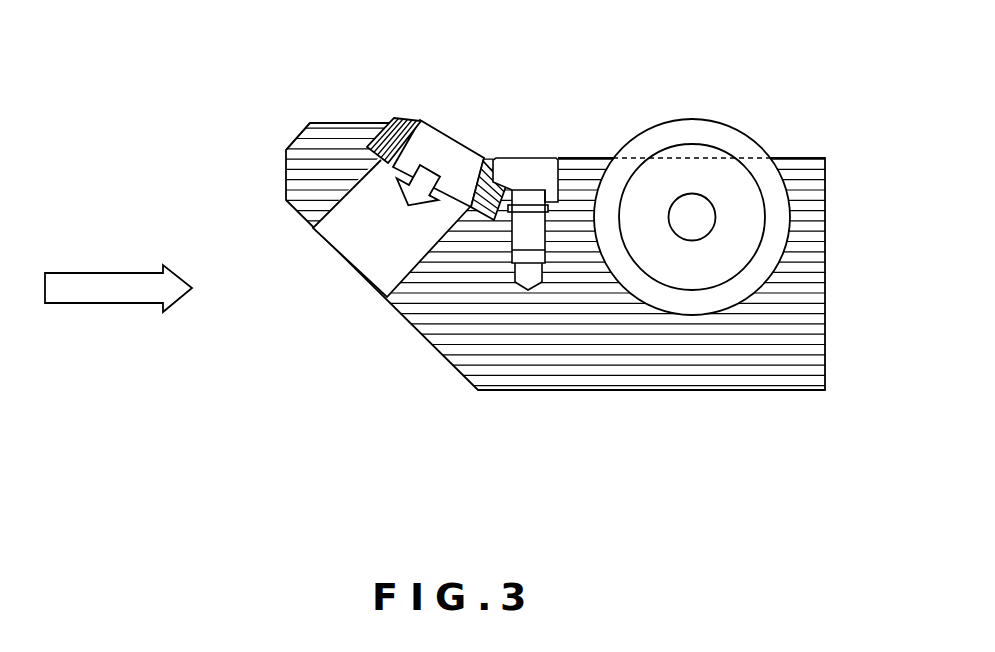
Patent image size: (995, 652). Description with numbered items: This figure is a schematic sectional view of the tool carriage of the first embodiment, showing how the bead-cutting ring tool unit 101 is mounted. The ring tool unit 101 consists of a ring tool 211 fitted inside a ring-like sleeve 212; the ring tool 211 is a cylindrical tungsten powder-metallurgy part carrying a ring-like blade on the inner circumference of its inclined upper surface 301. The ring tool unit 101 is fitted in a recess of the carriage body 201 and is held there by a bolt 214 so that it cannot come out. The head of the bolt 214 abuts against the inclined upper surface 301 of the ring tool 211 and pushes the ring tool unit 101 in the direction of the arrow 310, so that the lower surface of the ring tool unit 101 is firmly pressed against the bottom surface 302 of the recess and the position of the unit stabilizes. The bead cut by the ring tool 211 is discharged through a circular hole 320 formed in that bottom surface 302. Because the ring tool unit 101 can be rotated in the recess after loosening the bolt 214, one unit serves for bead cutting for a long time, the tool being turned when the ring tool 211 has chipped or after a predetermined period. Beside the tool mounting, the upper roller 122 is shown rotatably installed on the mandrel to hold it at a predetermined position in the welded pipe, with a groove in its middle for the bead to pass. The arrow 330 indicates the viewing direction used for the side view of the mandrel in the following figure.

The ring tool unit 101 is at (414, 105).
The ring tool 211 is at (407, 118).
The ring-like sleeve 212 is at (437, 63).
The inclined upper surface 301 is at (487, 160).
The bolt 214 is at (543, 165).
The roller 122 is at (680, 130).
The holder body 201 is at (567, 347).
The bottom surface 302 is at (385, 160).
The arrow 310 is at (410, 193).
The circular hole 320 is at (336, 212).
The arrow 330 is at (63, 283).